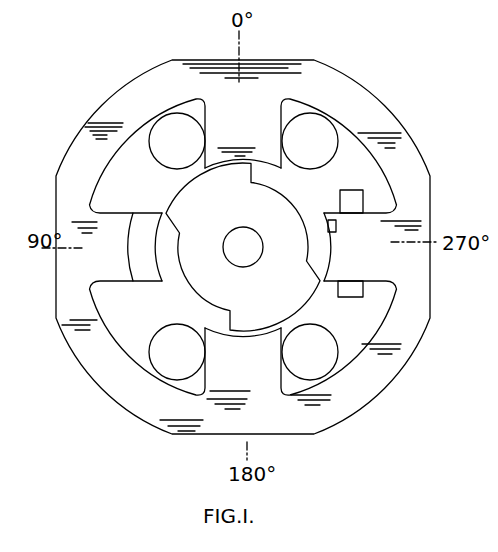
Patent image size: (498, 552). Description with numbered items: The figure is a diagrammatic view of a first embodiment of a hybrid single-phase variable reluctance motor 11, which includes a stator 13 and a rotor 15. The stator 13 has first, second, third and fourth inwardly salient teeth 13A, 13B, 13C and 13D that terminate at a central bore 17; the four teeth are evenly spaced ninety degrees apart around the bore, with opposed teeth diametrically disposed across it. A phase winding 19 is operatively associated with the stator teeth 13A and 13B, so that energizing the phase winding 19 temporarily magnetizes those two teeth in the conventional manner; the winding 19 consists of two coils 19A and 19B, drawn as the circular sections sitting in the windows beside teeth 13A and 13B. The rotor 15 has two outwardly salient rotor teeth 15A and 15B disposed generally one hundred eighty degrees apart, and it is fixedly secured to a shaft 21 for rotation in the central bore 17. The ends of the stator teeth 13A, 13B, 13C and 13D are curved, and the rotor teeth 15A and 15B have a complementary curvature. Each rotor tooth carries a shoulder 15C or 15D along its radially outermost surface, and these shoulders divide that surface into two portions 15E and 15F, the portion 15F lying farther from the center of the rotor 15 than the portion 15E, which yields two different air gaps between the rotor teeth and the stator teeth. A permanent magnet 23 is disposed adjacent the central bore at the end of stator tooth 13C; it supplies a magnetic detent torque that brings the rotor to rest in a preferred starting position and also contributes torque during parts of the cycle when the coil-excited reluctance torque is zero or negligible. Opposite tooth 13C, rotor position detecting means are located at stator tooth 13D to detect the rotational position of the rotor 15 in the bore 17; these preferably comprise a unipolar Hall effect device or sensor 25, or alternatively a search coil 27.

The hybrid single-phase variable reluctance motor 11 is at (444, 104).
The stator 13 is at (432, 210).
The first stator tooth 13A is at (263, 147).
The second stator tooth 13B is at (263, 372).
The third stator tooth 13C is at (126, 265).
The fourth stator tooth 13D is at (395, 266).
The rotor 15 is at (290, 202).
The rotor tooth 15A is at (217, 216).
The rotor tooth 15B is at (297, 318).
The shoulder 15C is at (210, 174).
The shoulder 15D is at (240, 326).
The portion of rotor tooth outermost surface 15E is at (234, 321).
The portion of rotor tooth outermost surface 15F is at (172, 224).
The central bore 17 is at (184, 288).
The phase winding 19 is at (159, 166).
The coil 19A is at (198, 152).
The coil 19B is at (196, 366).
The shaft 21 is at (262, 243).
The permanent magnet 23 is at (151, 265).
The Hall effect device 25 is at (336, 223).
The search coil 27 is at (363, 190).